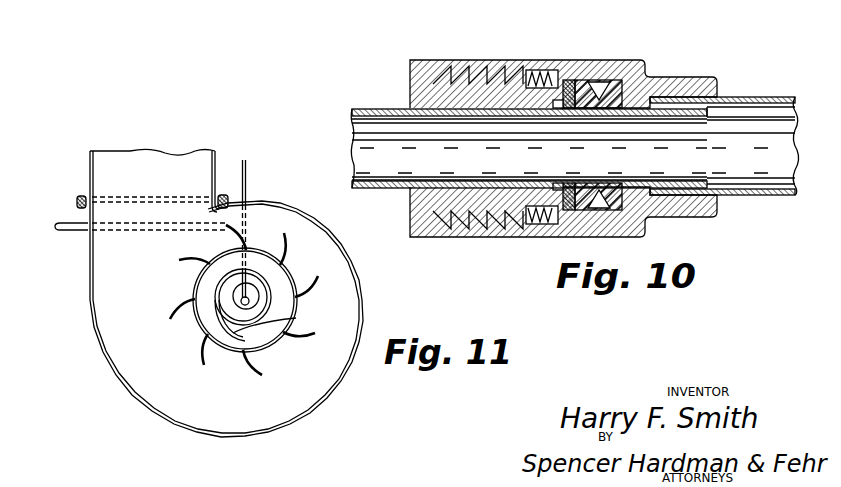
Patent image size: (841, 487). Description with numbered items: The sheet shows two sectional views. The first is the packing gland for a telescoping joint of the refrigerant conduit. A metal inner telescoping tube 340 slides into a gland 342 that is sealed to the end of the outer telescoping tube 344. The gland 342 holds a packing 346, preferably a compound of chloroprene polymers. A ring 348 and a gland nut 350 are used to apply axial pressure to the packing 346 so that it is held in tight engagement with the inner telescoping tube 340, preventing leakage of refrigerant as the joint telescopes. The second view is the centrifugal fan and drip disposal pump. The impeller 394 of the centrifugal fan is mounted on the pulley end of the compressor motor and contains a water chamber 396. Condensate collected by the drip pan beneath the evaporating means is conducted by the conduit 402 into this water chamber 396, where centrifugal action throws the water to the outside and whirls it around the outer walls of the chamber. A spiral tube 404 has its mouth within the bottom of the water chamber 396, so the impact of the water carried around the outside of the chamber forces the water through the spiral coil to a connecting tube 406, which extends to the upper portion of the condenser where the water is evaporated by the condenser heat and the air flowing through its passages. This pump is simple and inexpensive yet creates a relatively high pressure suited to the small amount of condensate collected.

In FIG. 10, the inner telescoping tube 340 is at (372, 110).
In FIG. 10, the gland 342 is at (645, 65).
In FIG. 10, the outer telescoping tube 344 is at (760, 97).
In FIG. 10, the packing 346 is at (598, 82).
In FIG. 10, the ring 348 is at (566, 82).
In FIG. 10, the gland nut 350 is at (410, 82).
In FIG. 11, the impeller 394 is at (298, 343).
In FIG. 11, the water chamber 396 is at (277, 285).
In FIG. 11, the conduit 402 is at (68, 233).
In FIG. 11, the spiral tube 404 is at (296, 318).
In FIG. 11, the connecting tube 406 is at (248, 177).